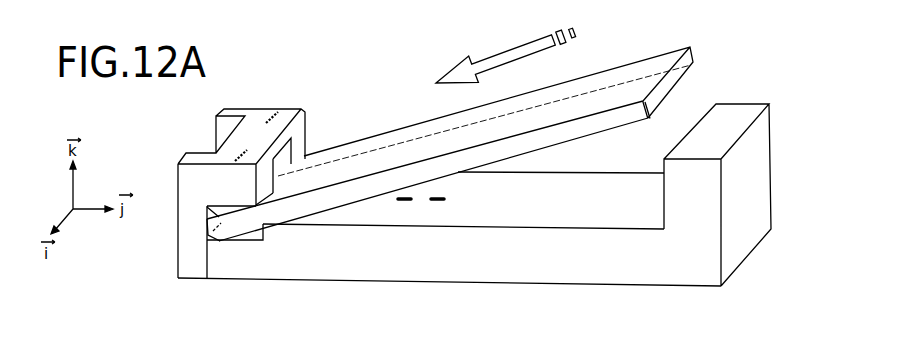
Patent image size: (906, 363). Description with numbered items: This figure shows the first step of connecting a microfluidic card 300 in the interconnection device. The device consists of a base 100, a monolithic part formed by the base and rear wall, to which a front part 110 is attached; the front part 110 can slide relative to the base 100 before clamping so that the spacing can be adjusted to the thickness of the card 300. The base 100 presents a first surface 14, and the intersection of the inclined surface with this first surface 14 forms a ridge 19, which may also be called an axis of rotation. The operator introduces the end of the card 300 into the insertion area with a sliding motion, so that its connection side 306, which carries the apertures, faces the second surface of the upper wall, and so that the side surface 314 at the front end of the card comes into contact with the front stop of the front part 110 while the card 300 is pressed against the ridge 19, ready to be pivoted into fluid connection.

The front part 110 is at (258, 112).
The card 300 is at (694, 66).
The connection side 306 is at (622, 74).
The first surface 14 is at (638, 187).
The base 100 is at (695, 268).
The side surface 314 is at (210, 231).
The ridge 19 is at (262, 224).